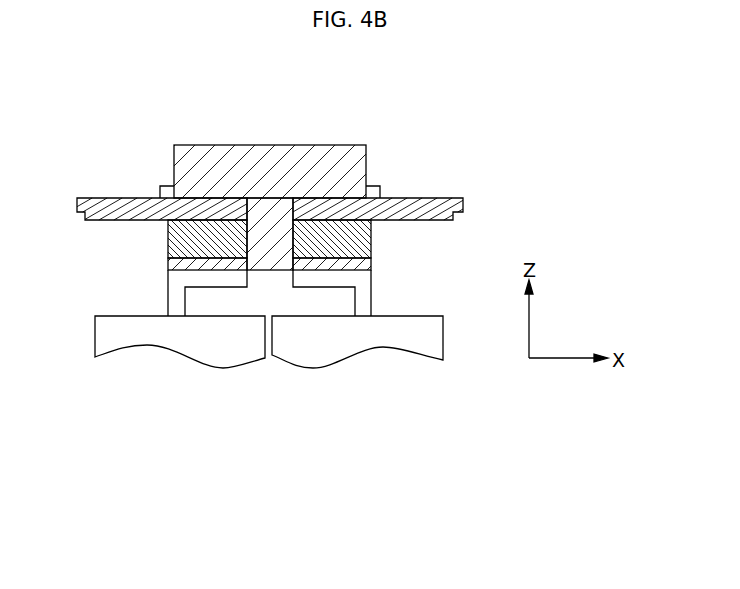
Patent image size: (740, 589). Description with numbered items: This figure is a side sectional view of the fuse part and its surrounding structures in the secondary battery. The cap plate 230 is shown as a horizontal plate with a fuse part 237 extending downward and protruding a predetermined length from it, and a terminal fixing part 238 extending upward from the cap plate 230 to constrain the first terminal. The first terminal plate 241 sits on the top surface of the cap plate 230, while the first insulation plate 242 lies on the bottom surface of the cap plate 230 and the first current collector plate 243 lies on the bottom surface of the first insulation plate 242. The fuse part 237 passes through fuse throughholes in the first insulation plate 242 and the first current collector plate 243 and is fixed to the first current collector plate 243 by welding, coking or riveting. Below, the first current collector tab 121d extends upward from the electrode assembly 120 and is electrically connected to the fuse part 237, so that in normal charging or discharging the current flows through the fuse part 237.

The cap plate 230 is at (103, 197).
The first terminal plate 241 is at (318, 152).
The fuse part 237 is at (265, 236).
The terminal fixing part 238 is at (374, 186).
The first insulation plate 242 is at (373, 238).
The first current collector plate 243 is at (373, 264).
The first current collector tab 121d is at (357, 297).
The electrode assembly 120 is at (357, 362).